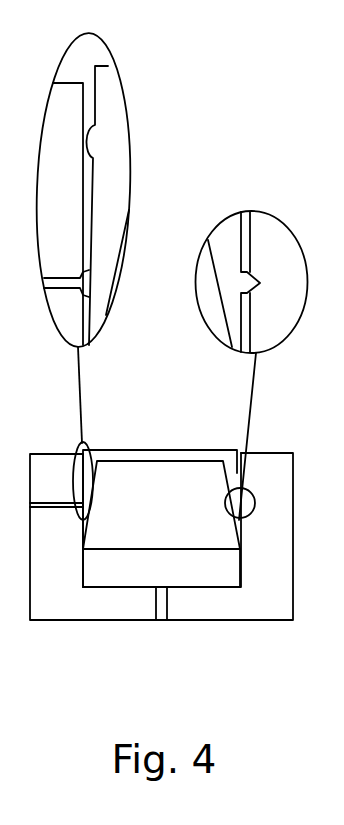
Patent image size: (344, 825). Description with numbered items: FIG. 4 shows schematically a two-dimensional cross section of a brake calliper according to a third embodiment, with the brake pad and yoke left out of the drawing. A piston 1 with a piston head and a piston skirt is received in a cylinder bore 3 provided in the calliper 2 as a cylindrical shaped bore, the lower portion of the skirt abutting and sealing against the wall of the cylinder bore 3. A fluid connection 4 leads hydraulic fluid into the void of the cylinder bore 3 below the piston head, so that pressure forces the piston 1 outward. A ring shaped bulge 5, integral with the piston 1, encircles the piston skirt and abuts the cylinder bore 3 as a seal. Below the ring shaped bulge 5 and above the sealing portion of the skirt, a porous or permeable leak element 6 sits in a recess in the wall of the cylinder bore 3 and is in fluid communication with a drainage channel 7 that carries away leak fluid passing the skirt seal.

The piston 1 is at (159, 444).
The housing 2 is at (266, 444).
The cylinder bore 3 is at (208, 573).
The fluid connection 4 is at (160, 609).
The ring shaped bulge 5 is at (110, 131).
The leak element 6 is at (228, 289).
The drainage channel 7 is at (59, 492).